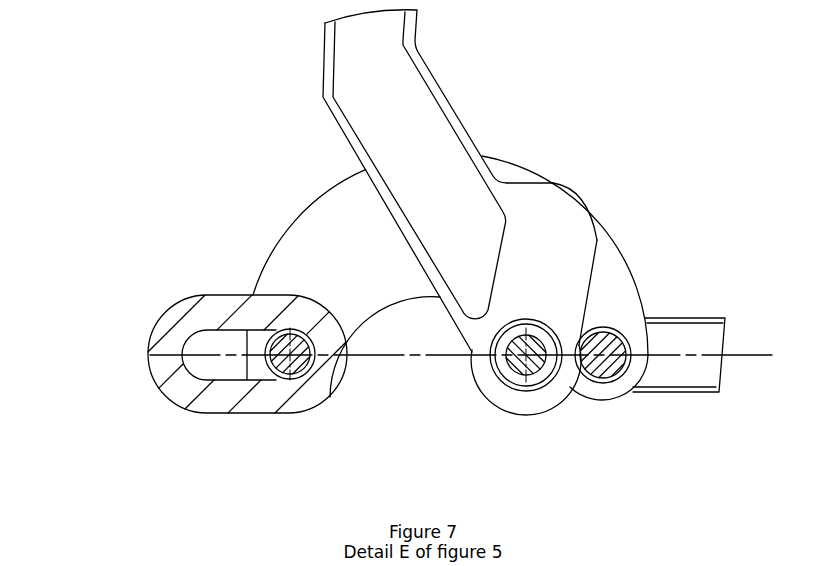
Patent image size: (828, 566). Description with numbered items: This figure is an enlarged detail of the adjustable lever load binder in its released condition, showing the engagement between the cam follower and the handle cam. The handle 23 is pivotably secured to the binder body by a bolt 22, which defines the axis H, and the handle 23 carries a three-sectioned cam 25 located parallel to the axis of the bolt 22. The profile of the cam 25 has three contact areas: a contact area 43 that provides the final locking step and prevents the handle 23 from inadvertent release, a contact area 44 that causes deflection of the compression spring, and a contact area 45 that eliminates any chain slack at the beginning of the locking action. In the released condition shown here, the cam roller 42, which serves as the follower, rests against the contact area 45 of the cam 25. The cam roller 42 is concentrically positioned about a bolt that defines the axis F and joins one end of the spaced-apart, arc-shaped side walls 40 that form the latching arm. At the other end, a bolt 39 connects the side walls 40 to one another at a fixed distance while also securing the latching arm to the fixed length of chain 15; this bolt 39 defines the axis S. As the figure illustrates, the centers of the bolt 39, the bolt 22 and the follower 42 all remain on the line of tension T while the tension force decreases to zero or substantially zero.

The chain 15 is at (162, 365).
The bolt 39 is at (283, 377).
The axis S is at (287, 337).
The side walls 40 is at (317, 230).
The handle 23 is at (378, 88).
The contact area 43 is at (518, 182).
The contact area 44 is at (573, 207).
The contact area 45 is at (590, 278).
The cam 25 is at (553, 247).
The bolt 22 is at (515, 370).
The axis H is at (525, 372).
The cam roller 42 is at (592, 380).
The axis F is at (642, 298).
The line of tension T is at (680, 357).